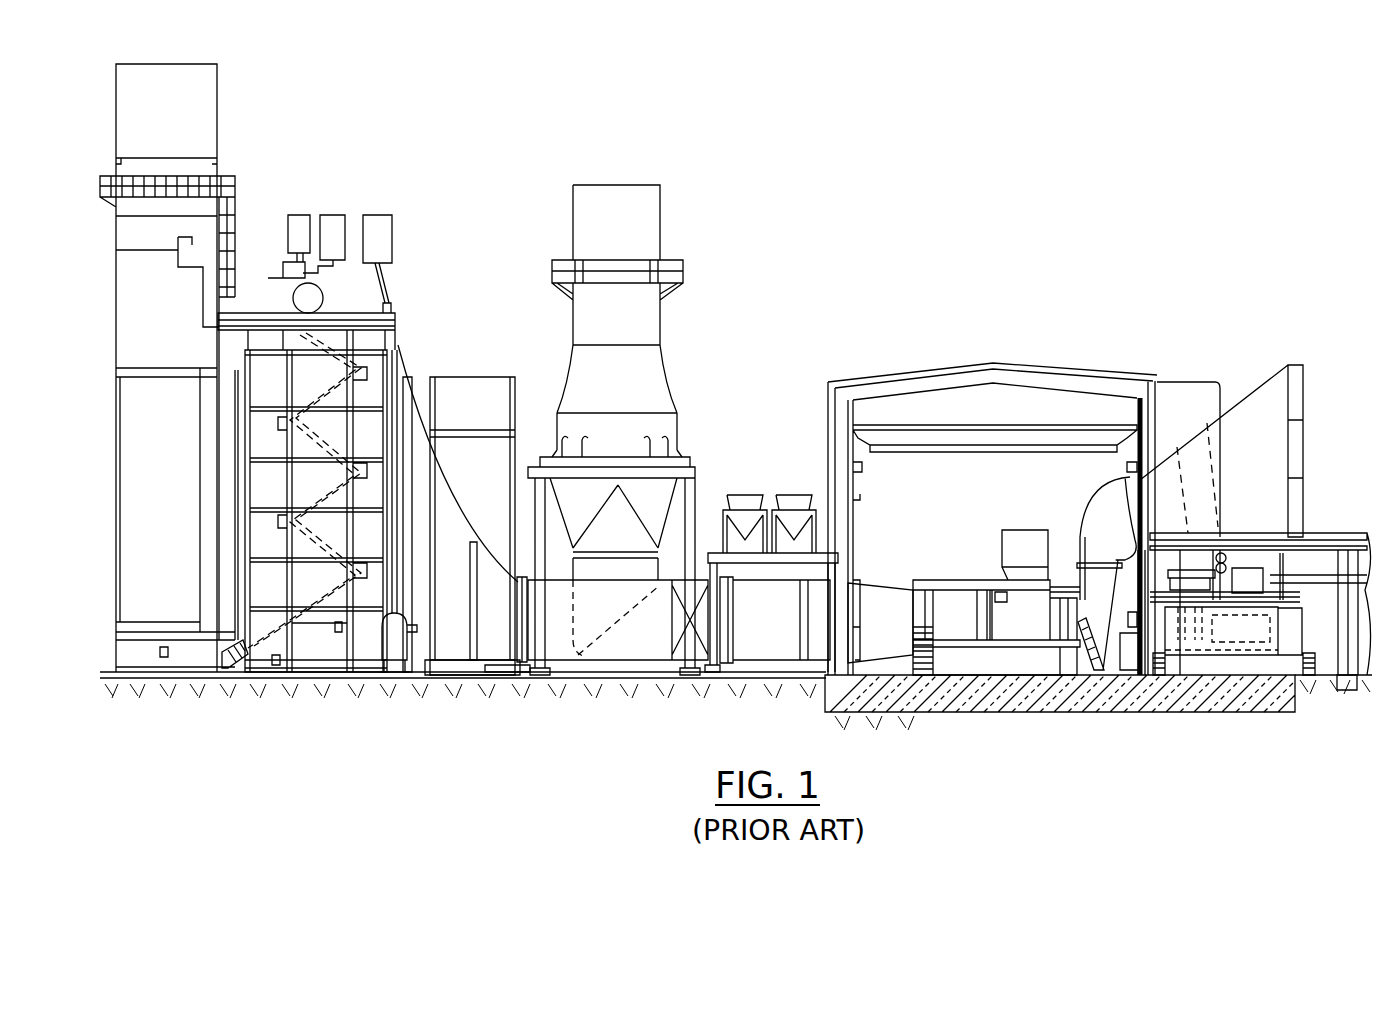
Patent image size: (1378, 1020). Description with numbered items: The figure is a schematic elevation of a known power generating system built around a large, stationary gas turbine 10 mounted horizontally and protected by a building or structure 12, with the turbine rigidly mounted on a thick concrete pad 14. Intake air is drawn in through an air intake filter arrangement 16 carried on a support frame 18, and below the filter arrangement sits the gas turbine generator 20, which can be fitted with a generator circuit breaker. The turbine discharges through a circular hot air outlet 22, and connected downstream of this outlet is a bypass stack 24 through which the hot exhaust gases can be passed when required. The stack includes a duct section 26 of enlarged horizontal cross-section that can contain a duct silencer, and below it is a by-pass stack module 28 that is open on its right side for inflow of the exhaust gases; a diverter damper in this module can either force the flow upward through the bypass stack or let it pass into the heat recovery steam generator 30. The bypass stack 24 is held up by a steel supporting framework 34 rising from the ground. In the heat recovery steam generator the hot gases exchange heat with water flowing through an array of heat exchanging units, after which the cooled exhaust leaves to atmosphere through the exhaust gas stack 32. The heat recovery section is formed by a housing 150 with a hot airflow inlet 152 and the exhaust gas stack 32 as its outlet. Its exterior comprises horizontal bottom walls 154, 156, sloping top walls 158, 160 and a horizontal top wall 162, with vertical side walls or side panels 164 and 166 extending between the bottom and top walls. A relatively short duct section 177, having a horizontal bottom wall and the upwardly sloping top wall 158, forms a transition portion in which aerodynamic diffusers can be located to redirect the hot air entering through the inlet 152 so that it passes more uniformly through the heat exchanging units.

The gas turbine 10 is at (958, 602).
The building or structure 12 is at (1107, 388).
The concrete pad 14 is at (1035, 700).
The air intake filter arrangement 16 is at (1248, 410).
The support frame 18 is at (1327, 537).
The gas turbine generator 20 is at (1197, 653).
The hot air outlet 22 is at (870, 597).
The bypass stack 24 is at (655, 325).
The duct section 26 is at (668, 424).
The by-pass stack module 28 is at (610, 645).
The heat recovery steam generator 30 is at (420, 500).
The exhaust gas stack 32 is at (130, 308).
The steel supporting framework 34 is at (697, 465).
The housing 150 is at (397, 378).
The hot airflow inlet 152 is at (507, 627).
The horizontal bottom wall 154 is at (452, 673).
The horizontal bottom wall 156 is at (325, 672).
The sloping top wall 158 is at (490, 552).
The sloping top wall 160 is at (418, 408).
The horizontal top wall 162 is at (378, 343).
The side wall 164 is at (422, 645).
The side wall 166 is at (265, 362).
The duct section 177 is at (508, 680).